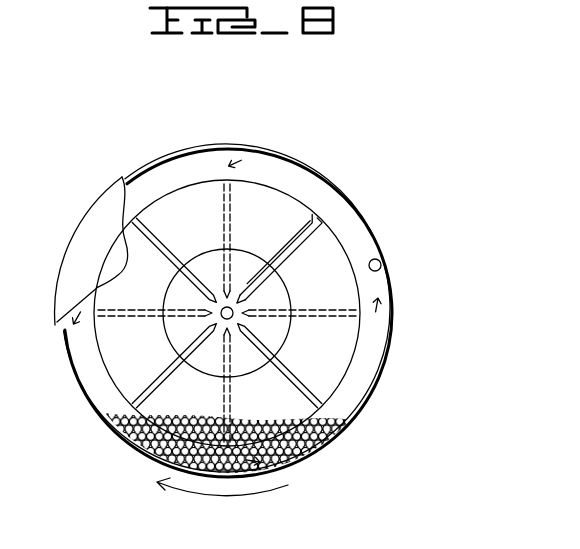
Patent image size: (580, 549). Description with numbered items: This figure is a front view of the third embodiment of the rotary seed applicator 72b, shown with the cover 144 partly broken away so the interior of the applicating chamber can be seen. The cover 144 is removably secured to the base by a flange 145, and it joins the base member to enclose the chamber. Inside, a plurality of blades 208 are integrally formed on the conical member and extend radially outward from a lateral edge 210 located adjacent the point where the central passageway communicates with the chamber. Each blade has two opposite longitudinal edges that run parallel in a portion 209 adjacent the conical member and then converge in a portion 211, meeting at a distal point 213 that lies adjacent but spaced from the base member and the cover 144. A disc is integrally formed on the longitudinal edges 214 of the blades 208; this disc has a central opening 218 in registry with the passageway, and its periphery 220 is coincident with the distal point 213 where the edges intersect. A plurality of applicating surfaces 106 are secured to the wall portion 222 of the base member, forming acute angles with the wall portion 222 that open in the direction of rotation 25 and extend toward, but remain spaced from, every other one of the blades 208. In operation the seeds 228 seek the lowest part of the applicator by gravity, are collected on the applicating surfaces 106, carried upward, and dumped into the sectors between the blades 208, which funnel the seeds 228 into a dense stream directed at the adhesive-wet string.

The longitudinal edge 214 is at (282, 152).
The third embodiment of the rotary seed applicator 72b is at (318, 173).
The distal point 213 is at (281, 228).
The convergent portion 211 is at (290, 237).
The parallel portion 209 is at (248, 277).
The blades 208 is at (320, 308).
The lateral edge 210 is at (243, 322).
The central opening 218 is at (224, 321).
The wall portion 222 is at (380, 255).
The applicating surfaces 106 is at (383, 303).
The periphery 220 is at (347, 369).
The seeds 228 is at (308, 452).
The direction of rotation 25 is at (262, 493).
The flange 145 is at (85, 213).
The cover 144 is at (78, 273).